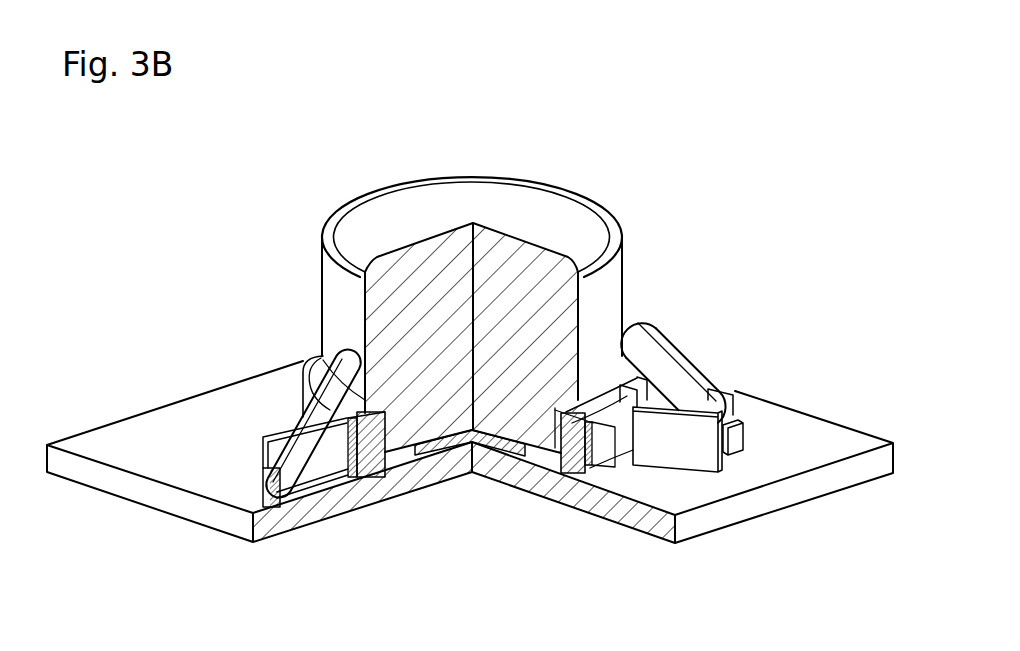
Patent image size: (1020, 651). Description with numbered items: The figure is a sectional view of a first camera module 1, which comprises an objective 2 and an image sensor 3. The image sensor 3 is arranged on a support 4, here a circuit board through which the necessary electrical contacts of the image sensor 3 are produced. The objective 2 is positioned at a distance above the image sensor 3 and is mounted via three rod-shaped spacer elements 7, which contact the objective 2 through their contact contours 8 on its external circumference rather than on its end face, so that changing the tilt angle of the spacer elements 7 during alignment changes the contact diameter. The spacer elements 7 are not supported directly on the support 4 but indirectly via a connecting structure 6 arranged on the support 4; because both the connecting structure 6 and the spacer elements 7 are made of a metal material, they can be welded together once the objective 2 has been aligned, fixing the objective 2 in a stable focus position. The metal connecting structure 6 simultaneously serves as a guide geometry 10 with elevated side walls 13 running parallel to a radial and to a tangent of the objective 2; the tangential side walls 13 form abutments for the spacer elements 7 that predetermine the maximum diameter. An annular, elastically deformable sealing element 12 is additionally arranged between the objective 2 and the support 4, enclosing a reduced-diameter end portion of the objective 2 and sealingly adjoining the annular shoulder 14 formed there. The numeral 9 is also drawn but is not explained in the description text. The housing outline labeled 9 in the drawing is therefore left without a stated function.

The camera module 1 is at (800, 252).
The objective 2 is at (464, 207).
The image sensor 3 is at (445, 447).
The support 4 is at (168, 470).
The connecting structure 6 is at (561, 493).
The spacer elements 7 is at (312, 428).
The contact contours 8 is at (638, 326).
The housing 9 is at (326, 285).
The guide geometry 10 is at (362, 478).
The sealing element 12 is at (577, 463).
The side walls 13 is at (270, 440).
The annular shoulder 14 is at (553, 418).